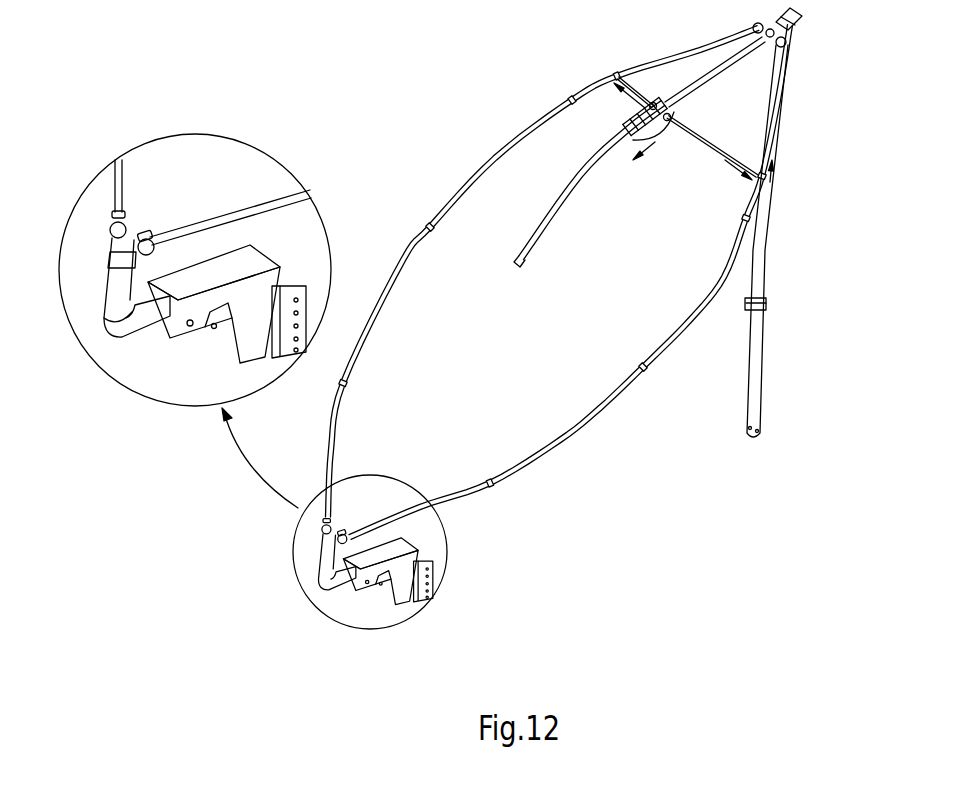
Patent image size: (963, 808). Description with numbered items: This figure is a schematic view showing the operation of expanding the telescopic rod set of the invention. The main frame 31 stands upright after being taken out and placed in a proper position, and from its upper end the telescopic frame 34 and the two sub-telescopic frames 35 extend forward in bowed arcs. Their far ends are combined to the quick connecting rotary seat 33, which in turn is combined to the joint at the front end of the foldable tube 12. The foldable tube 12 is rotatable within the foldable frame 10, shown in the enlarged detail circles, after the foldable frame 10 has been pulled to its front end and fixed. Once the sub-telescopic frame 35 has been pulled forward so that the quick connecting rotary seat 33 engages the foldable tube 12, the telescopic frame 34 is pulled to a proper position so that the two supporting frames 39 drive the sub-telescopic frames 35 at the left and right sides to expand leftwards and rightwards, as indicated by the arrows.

The foldable frame 10 is at (188, 325).
The foldable tube 12 is at (118, 302).
The main frame 31 is at (756, 352).
The quick connecting rotary seat 33 is at (116, 248).
The telescopic frame 34 is at (574, 195).
The sub-telescopic frame 35 is at (495, 158).
The supporting frame 39 is at (735, 162).